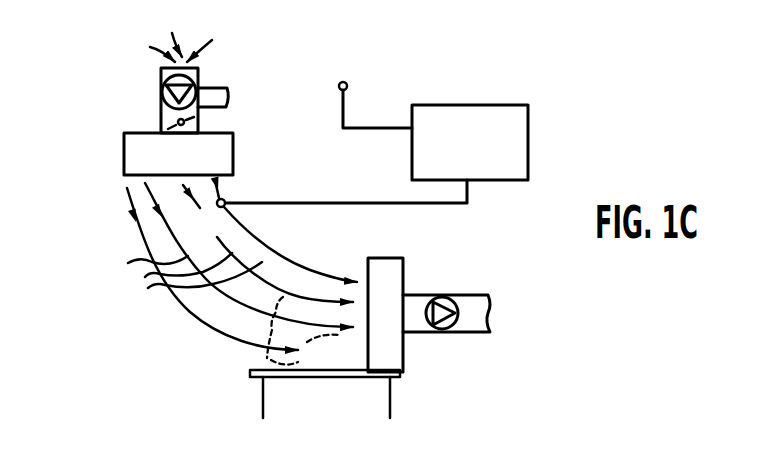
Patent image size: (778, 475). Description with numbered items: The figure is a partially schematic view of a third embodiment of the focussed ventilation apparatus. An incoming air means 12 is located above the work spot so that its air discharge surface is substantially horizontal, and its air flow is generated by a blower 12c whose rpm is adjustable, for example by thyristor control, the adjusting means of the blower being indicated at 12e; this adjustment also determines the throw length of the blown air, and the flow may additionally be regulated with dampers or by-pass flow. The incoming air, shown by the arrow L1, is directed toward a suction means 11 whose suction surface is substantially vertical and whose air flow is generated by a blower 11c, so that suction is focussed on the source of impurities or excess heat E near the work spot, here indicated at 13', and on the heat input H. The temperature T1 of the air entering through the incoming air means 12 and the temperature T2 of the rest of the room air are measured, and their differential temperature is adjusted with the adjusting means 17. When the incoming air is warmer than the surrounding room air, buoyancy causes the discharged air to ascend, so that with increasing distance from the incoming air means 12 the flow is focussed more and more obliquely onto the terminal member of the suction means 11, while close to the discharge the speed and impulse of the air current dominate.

The heat input H is at (83, 49).
The incoming air means 12 is at (128, 120).
The blower 12c is at (162, 97).
The adjusting means of the blower 12e is at (217, 87).
The temperature of the rest of the room air T2 is at (352, 88).
The adjusting means 17 is at (489, 158).
The temperature of the air entering through the incoming air means T1 is at (209, 222).
The arrow indicating the incoming air L1 is at (188, 276).
The source of impurities and/or excess heat E is at (303, 331).
The workpiece / object on table 13' is at (292, 384).
The suction means 11 is at (408, 280).
The blower 11c is at (447, 332).